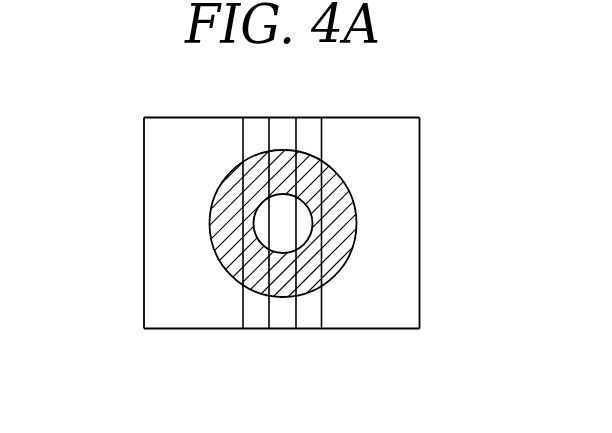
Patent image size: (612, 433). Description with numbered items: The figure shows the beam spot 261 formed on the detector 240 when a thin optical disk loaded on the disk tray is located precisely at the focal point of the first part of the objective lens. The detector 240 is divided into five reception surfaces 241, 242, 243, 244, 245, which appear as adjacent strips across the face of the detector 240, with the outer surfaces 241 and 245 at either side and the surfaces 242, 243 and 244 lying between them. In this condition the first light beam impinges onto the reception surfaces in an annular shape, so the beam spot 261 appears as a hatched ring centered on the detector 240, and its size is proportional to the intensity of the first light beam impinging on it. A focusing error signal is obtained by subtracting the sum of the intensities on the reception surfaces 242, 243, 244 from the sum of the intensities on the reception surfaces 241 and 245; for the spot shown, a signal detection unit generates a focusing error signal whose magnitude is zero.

The detector 240 is at (473, 84).
The reception surface 241 is at (162, 152).
The reception surface 242 is at (258, 319).
The reception surface 243 is at (284, 318).
The reception surface 244 is at (306, 319).
The reception surface 245 is at (400, 154).
The beam spot 261 is at (227, 228).